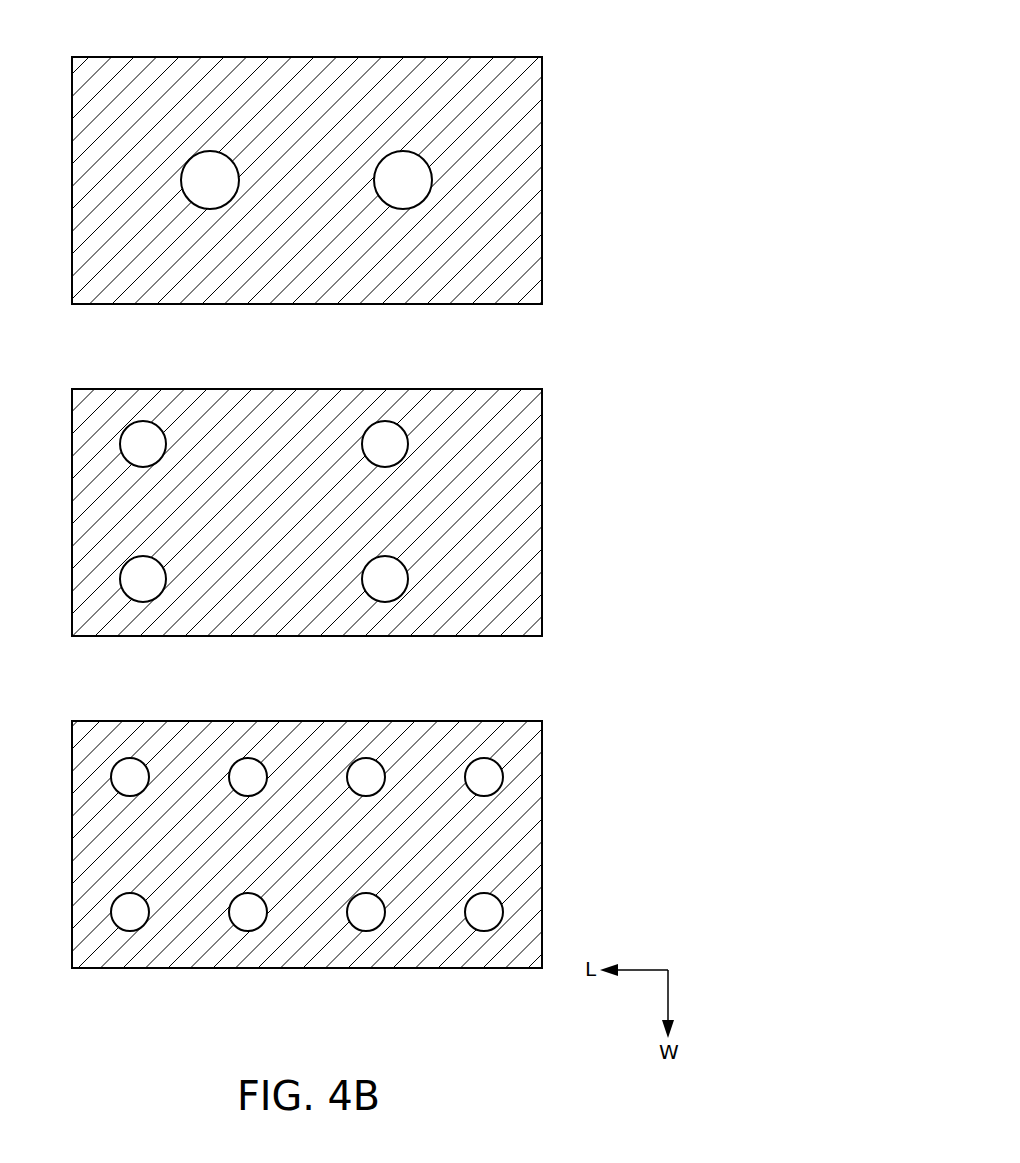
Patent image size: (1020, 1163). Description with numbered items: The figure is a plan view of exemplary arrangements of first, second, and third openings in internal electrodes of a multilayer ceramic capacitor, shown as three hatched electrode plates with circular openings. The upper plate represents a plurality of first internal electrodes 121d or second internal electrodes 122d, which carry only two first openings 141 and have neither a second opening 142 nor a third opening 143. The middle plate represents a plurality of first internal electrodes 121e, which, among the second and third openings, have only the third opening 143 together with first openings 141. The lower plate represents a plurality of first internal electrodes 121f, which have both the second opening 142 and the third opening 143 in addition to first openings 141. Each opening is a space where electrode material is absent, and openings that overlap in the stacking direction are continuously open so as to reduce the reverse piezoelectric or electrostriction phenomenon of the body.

The first internal electrodes 121d is at (398, 180).
The second internal electrodes 122d is at (500, 222).
The first internal electrodes 121e is at (500, 555).
The first internal electrodes 121f is at (500, 857).
The first opening 141 is at (400, 172).
The second opening 142 is at (366, 777).
The third opening 143 is at (143, 442).